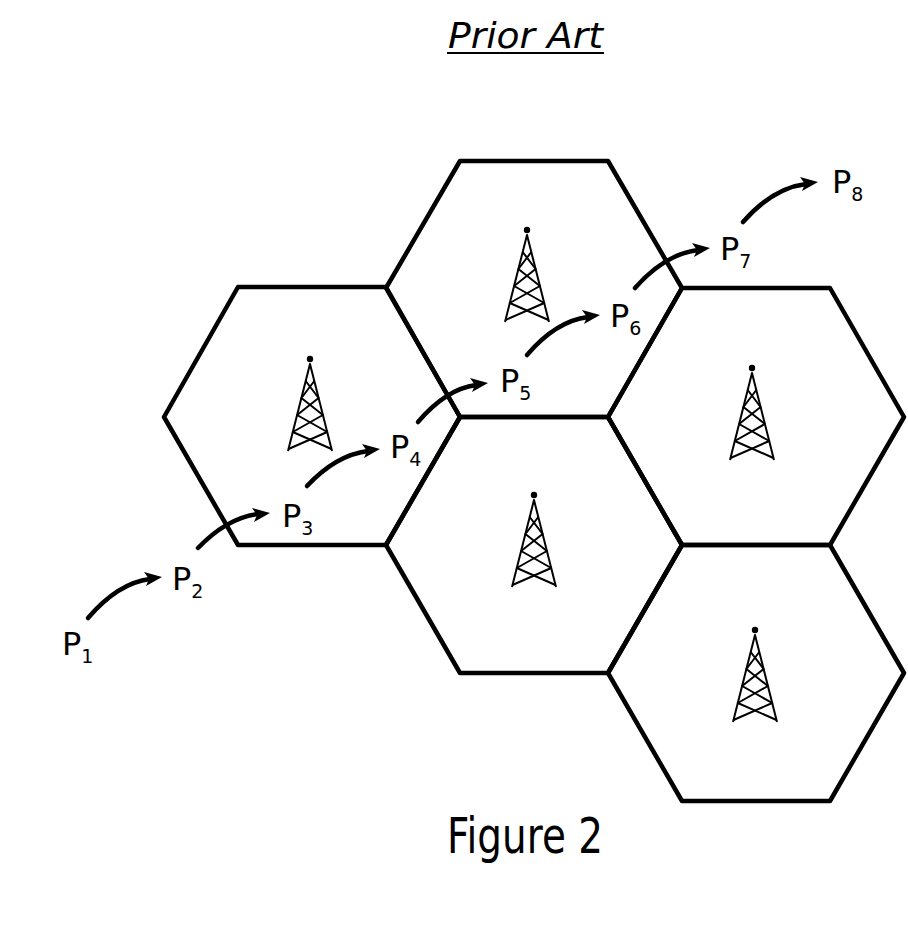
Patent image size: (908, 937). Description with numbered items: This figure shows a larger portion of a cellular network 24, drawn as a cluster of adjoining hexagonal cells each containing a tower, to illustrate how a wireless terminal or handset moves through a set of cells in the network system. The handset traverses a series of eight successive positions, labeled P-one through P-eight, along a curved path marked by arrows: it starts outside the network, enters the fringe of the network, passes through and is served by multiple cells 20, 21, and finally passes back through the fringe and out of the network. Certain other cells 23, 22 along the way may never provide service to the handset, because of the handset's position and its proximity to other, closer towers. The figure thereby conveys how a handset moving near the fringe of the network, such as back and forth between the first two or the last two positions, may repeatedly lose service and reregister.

The cell 20 is at (276, 339).
The cell 21 is at (500, 207).
The cell 22 is at (716, 331).
The cell 23 is at (497, 466).
The cellular network 24 is at (98, 130).